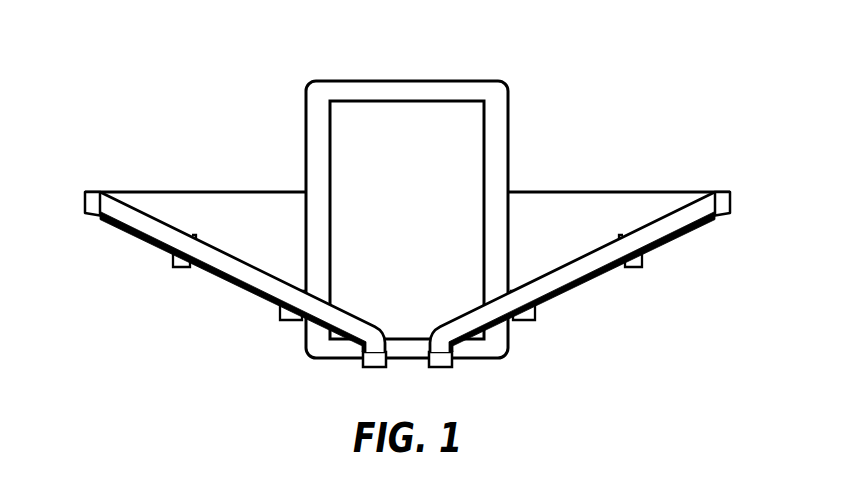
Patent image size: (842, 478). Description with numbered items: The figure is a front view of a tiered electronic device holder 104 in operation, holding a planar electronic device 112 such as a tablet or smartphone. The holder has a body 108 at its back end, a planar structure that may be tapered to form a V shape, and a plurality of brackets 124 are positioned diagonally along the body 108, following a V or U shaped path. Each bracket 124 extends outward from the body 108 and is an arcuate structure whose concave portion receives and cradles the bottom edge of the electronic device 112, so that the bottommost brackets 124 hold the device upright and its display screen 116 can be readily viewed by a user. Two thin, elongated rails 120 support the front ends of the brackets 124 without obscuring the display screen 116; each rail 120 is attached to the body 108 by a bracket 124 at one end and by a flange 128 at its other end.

The tiered electronic device holder 104 is at (570, 146).
The body 108 is at (563, 256).
The electronic device 112 is at (363, 80).
The display screen 116 is at (427, 234).
The rail 120 is at (130, 205).
The bracket 124 is at (183, 268).
The flange 128 is at (83, 203).